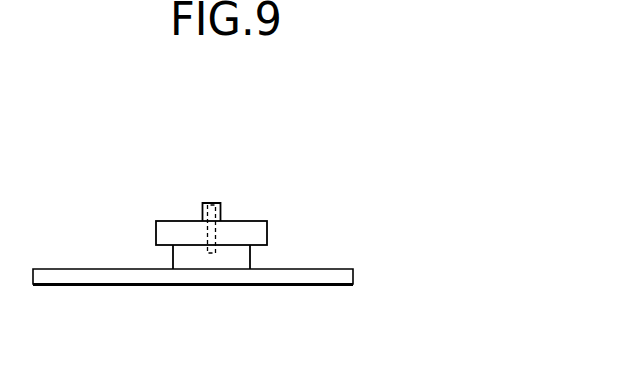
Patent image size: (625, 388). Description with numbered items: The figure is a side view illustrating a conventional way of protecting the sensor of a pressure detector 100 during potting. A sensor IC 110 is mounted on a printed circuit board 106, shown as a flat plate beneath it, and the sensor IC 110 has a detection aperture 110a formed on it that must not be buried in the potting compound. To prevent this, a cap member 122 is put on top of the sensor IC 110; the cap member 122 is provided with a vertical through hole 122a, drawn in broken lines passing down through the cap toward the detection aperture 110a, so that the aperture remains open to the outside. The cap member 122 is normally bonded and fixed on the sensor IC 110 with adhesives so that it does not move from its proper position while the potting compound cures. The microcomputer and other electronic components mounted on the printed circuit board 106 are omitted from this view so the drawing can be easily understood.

The pressure detector 100 is at (388, 163).
The printed circuit board 106 is at (311, 274).
The sensor IC 110 is at (250, 258).
The detection aperture 110a is at (216, 253).
The cap member 122 is at (246, 221).
The vertical through hole 122a is at (206, 240).